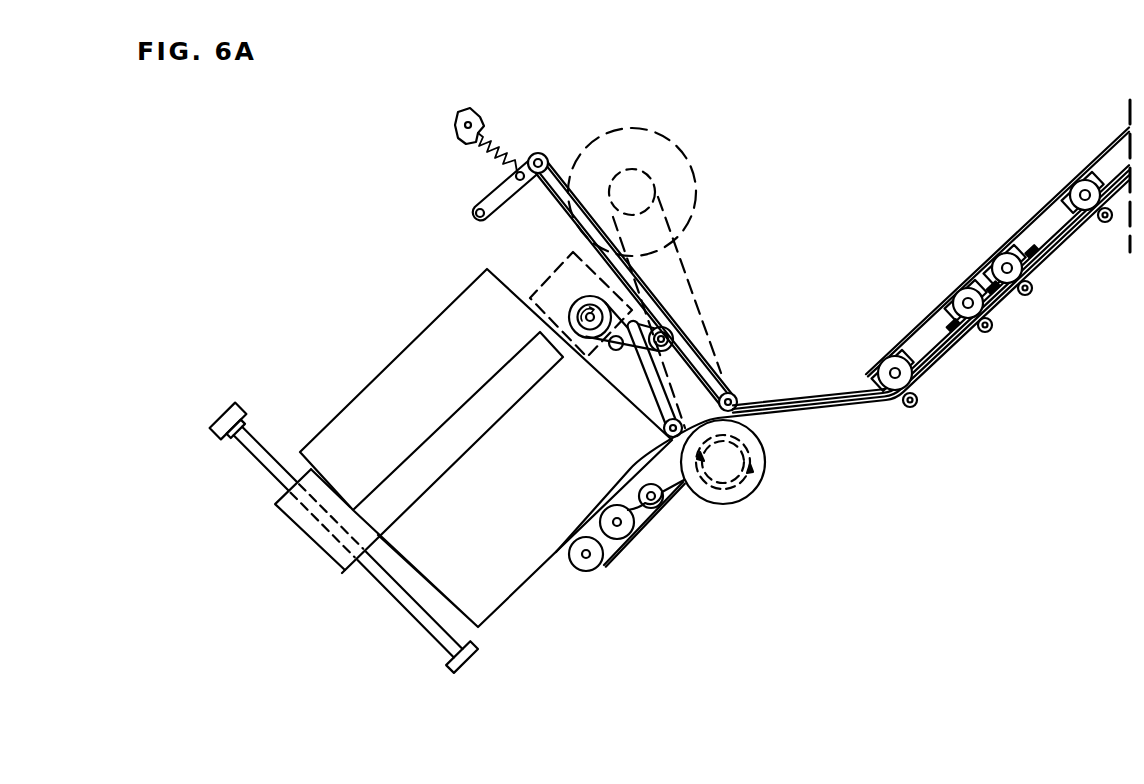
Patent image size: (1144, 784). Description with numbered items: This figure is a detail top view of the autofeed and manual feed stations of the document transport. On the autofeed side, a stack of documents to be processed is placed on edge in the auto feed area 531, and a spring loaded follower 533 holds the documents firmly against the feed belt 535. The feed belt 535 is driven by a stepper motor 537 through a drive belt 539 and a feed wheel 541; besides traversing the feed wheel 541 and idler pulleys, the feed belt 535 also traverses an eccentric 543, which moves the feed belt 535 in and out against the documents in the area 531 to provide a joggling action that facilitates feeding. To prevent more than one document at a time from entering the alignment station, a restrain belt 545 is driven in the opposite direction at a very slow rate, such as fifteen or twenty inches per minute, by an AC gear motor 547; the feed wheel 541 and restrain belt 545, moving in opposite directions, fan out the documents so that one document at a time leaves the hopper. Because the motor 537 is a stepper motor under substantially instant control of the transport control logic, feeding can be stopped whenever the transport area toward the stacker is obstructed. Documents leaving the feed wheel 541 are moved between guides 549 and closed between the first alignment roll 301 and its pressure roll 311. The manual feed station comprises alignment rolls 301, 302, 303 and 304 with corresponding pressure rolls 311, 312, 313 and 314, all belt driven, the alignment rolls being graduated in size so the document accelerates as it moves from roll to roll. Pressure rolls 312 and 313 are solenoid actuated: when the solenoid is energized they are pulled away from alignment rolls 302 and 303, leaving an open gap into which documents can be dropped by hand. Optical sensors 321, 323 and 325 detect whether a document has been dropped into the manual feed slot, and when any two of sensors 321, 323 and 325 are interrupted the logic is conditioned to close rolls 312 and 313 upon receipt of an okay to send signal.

The auto feed area 531 is at (510, 588).
The spring loaded follower 533 is at (310, 530).
The feed belt 535 is at (697, 505).
The stepper motor 537 is at (676, 146).
The drive belt 539 is at (690, 291).
The feed wheel 541 is at (760, 484).
The eccentric 543 is at (625, 527).
The restrain belt 545 is at (546, 198).
The AC gear motor 547 is at (559, 267).
The guides 549 is at (826, 403).
The alignment roll 301 is at (879, 364).
The alignment roll 302 is at (956, 296).
The alignment roll 303 is at (1005, 248).
The alignment roll 304 is at (1075, 181).
The pressure roll 311 is at (918, 398).
The pressure roll 312 is at (994, 328).
The pressure roll 313 is at (1033, 291).
The pressure roll 314 is at (1108, 222).
The optical sensor 321 is at (952, 324).
The optical sensor 323 is at (983, 277).
The optical sensor 325 is at (1043, 220).